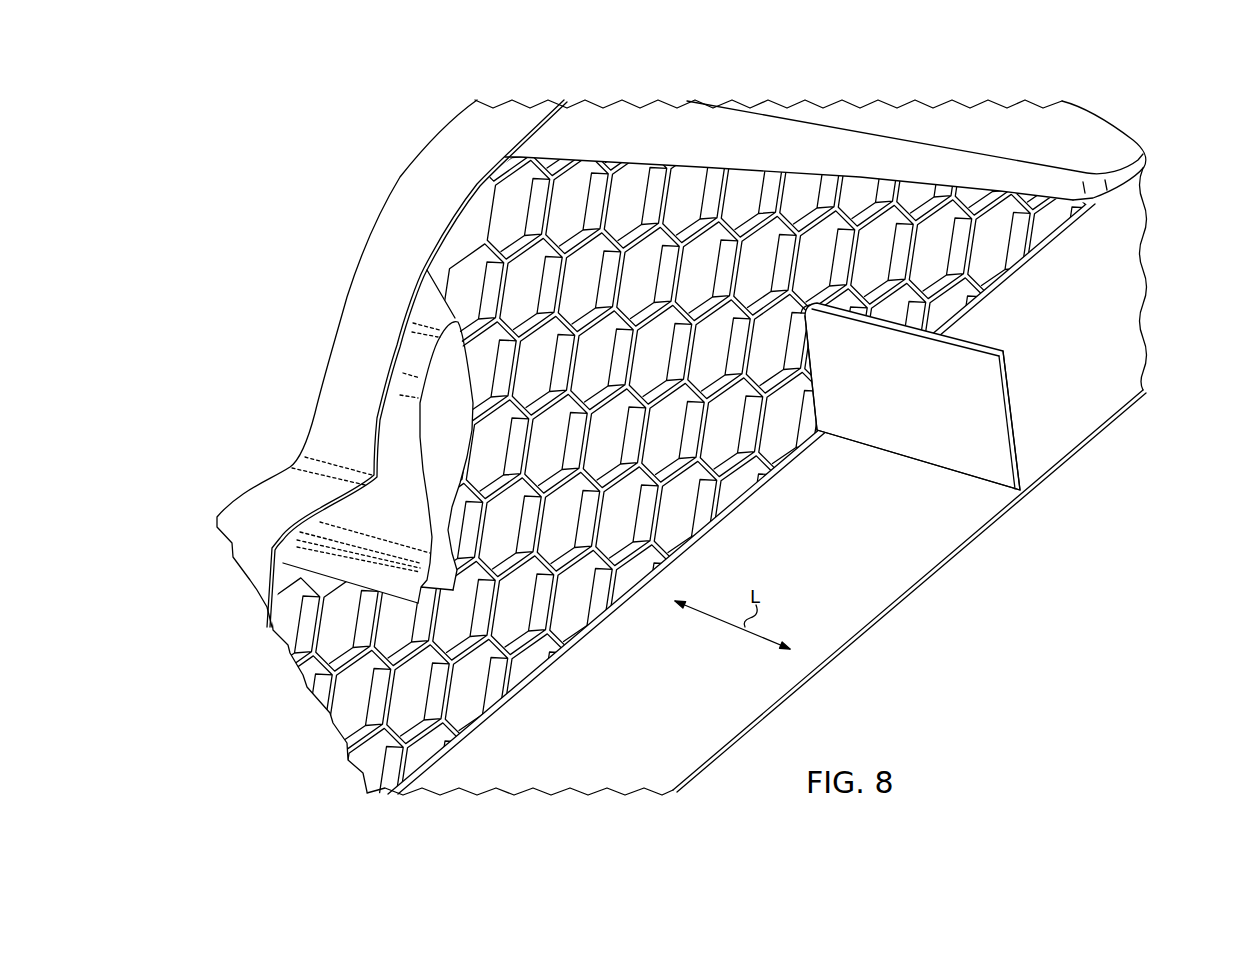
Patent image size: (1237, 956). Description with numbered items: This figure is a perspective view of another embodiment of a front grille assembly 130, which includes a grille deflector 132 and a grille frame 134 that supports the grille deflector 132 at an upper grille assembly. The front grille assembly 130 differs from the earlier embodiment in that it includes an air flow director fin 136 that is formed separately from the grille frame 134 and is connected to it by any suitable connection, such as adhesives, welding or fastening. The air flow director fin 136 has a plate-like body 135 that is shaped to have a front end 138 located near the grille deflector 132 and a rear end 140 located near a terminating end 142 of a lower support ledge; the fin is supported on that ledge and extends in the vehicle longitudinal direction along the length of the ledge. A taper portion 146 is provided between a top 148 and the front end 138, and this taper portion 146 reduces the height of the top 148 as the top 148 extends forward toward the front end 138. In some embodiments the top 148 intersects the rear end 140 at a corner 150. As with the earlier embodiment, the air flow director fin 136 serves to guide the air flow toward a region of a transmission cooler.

The front grille assembly 130 is at (305, 263).
The grille deflector 132 is at (320, 687).
The grille frame 134 is at (1152, 264).
The plate-like body 135 is at (918, 445).
The air flow director fin 136 is at (942, 393).
The front end 138 is at (812, 404).
The rear end 140 is at (1022, 476).
The terminating end 142 is at (913, 591).
The taper portion 146 is at (801, 311).
The top 148 is at (968, 344).
The corner 150 is at (1010, 357).